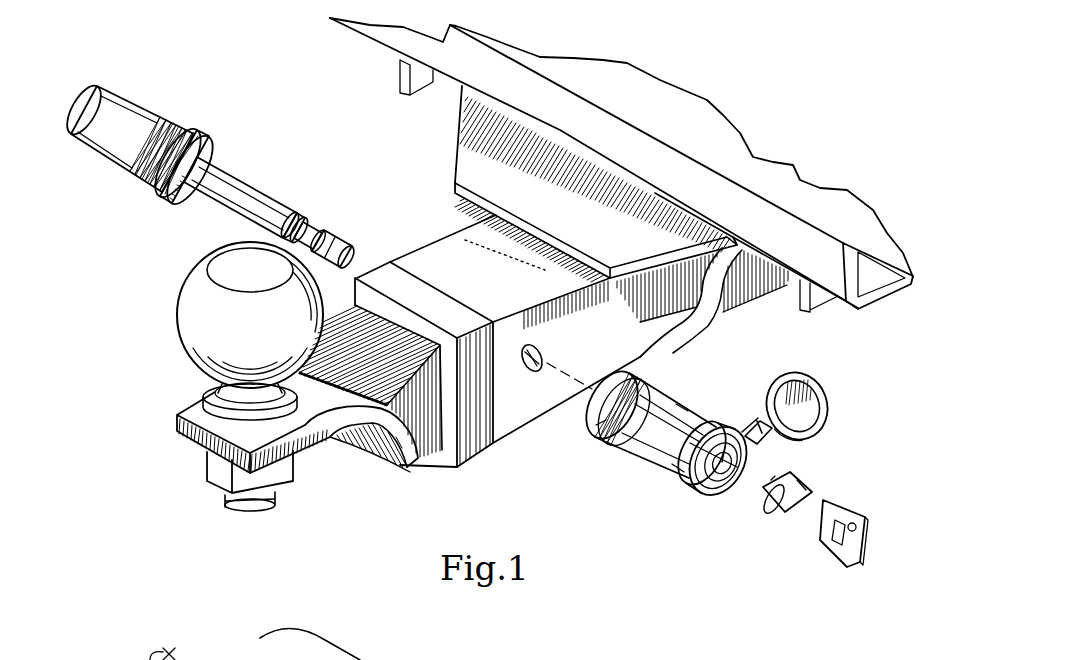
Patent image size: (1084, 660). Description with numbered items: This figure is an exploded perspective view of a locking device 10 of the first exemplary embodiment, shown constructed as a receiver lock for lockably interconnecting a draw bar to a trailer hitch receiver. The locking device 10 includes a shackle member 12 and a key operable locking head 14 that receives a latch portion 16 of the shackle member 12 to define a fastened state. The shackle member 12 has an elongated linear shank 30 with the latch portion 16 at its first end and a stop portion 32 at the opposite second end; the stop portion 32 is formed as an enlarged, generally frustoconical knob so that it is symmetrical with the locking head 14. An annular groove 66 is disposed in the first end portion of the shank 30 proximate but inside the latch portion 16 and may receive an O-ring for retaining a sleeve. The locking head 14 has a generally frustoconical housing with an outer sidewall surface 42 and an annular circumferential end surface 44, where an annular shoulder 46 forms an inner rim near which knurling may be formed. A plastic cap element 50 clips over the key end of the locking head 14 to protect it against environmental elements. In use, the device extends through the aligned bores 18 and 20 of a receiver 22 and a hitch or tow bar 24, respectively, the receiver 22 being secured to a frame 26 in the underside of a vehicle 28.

The locking device 10 is at (670, 497).
The shackle member 12 is at (231, 161).
The key operable locking head 14 is at (638, 443).
The latch portion 16 is at (340, 240).
The bore 18 is at (540, 350).
The bore 20 is at (538, 370).
The receiver 22 is at (662, 297).
The hitch or tow bar 24 is at (406, 411).
The frame 26 is at (553, 157).
The vehicle 28 is at (712, 133).
The shank 30 is at (257, 207).
The stop portion 32 is at (120, 118).
The outer sidewall surface 42 is at (676, 462).
The annular circumferential end surface 44 is at (590, 420).
The annular shoulder 46 is at (648, 382).
The plastic cap element 50 is at (828, 393).
The annular groove 66 is at (303, 218).